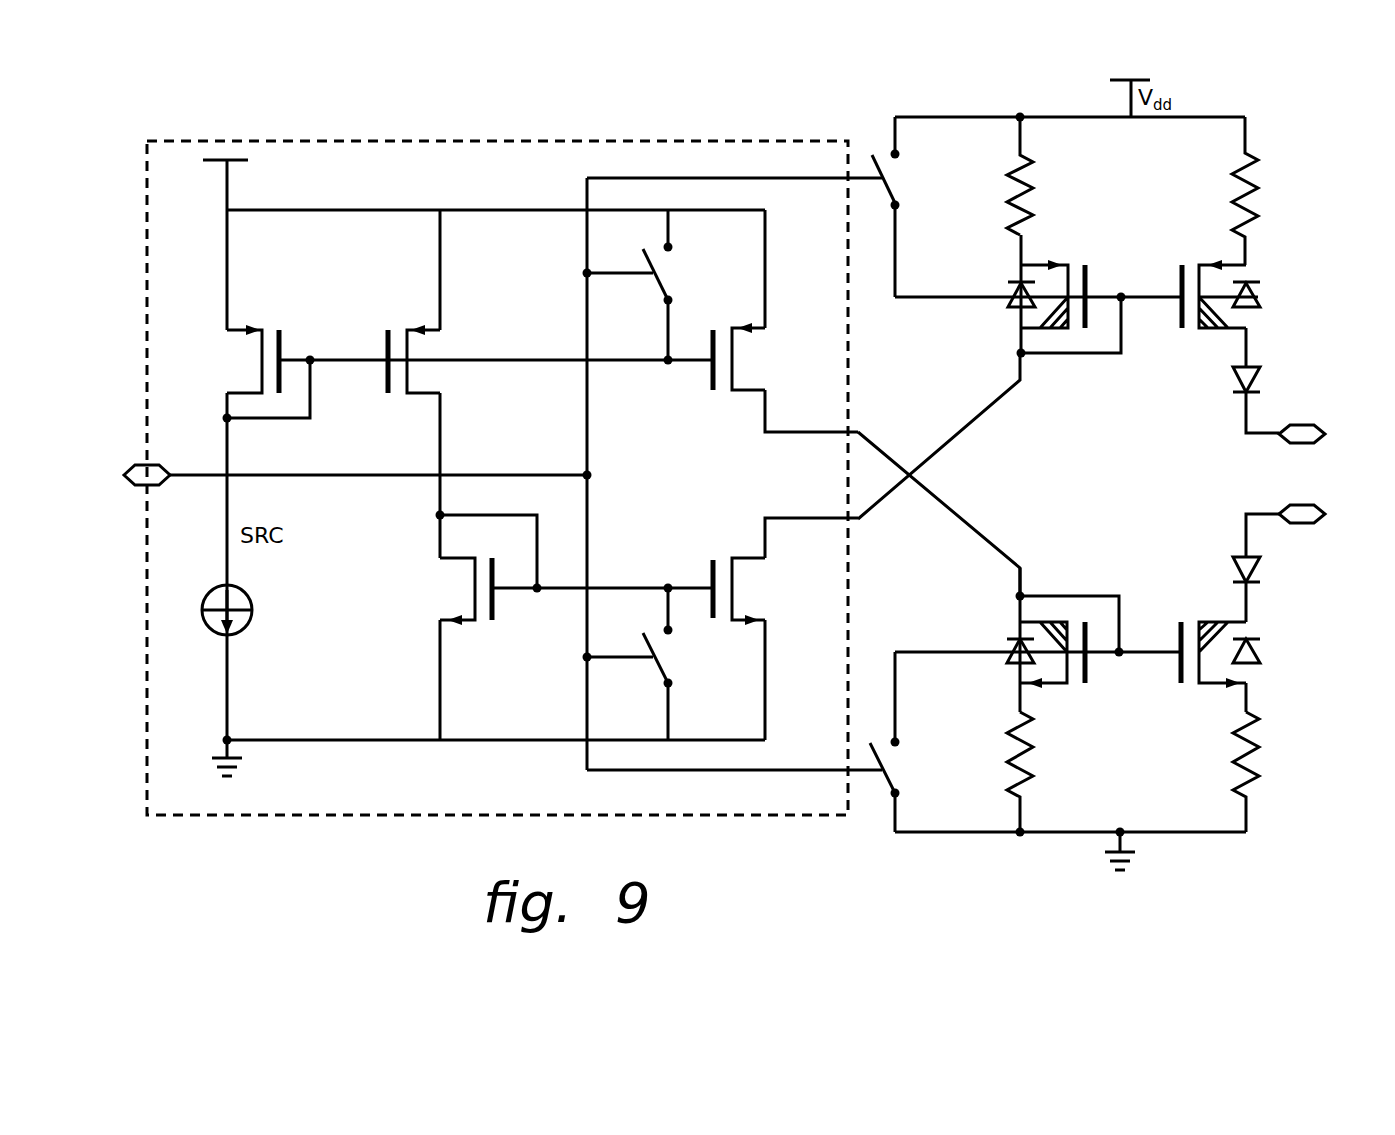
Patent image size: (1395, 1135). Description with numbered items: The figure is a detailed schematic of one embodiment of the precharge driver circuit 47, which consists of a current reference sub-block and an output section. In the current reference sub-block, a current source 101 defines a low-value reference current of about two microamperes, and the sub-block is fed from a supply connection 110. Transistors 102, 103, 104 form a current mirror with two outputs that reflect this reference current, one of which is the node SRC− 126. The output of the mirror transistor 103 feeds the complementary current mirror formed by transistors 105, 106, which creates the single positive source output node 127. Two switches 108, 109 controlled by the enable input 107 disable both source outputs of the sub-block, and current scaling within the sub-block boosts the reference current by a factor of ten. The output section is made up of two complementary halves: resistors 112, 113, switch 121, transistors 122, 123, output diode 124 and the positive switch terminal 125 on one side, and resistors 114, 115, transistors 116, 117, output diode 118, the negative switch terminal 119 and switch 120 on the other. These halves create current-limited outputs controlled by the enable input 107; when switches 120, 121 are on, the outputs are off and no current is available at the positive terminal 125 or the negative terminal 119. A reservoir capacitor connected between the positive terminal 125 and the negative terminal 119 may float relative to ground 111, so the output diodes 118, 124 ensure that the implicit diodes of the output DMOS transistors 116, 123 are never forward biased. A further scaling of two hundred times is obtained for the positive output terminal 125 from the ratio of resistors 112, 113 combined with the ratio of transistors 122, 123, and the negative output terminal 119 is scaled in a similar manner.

The precharge driver circuit 47 is at (510, 110).
The current source 101 is at (244, 640).
The transistor 102 is at (270, 313).
The transistor M_1 103 is at (448, 378).
The transistor 104 is at (770, 370).
The transistor 105 is at (770, 591).
The transistor 106 is at (413, 613).
The ENABLE input 107 is at (127, 488).
The switch 108 is at (650, 665).
The switch 109 is at (652, 283).
The supply voltage Vdd 110 is at (293, 182).
The ground 111 is at (250, 758).
The resistor 112 is at (1228, 187).
The resistor 113 is at (1040, 217).
The resistor 114 is at (1223, 755).
The resistor 115 is at (1040, 773).
The output DMOS transistor 116 is at (1268, 666).
The transistor 117 is at (997, 668).
The output diode 118 is at (1225, 567).
The SW− terminal 119 is at (1300, 500).
The switch 120 is at (878, 790).
The switch 121 is at (872, 142).
The transistor 122 is at (1003, 310).
The output DMOS transistor 123 is at (1268, 303).
The output diode 124 is at (1227, 390).
The SW+ terminal 125 is at (1280, 438).
The node SRC− 126 is at (988, 535).
The node SRC+ 127 is at (972, 427).